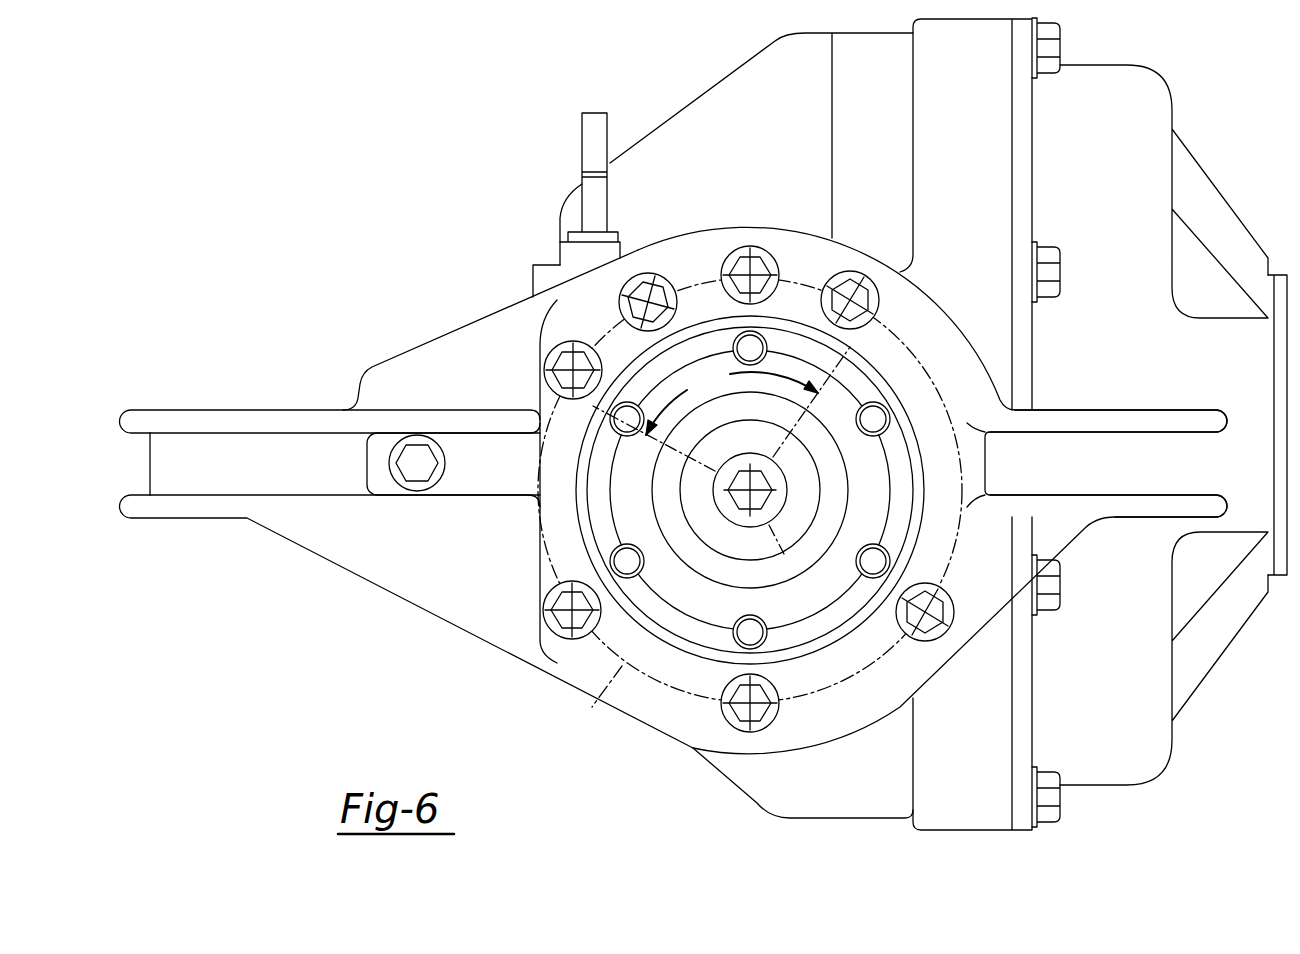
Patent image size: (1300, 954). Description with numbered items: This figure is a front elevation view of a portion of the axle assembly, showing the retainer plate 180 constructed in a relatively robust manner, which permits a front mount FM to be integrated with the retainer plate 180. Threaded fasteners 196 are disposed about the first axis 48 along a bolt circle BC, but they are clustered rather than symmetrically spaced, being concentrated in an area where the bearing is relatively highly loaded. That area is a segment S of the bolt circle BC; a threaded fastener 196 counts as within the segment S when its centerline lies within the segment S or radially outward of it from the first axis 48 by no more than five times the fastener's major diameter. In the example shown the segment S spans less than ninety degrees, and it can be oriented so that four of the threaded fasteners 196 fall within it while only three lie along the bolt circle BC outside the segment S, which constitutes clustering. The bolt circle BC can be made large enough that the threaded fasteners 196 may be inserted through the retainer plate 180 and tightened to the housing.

The retainer plate 180 is at (425, 592).
The threaded fasteners 196 is at (863, 290).
The front mount FM is at (1082, 423).
The bolt circle BC is at (587, 718).
The first axis 48 is at (752, 492).
The segment S is at (732, 401).